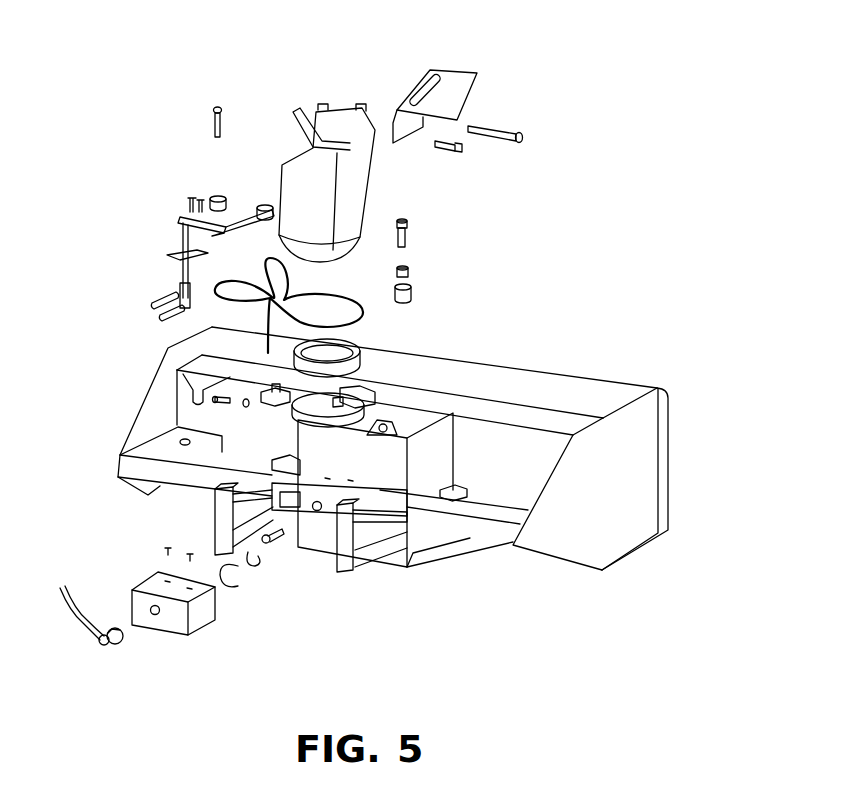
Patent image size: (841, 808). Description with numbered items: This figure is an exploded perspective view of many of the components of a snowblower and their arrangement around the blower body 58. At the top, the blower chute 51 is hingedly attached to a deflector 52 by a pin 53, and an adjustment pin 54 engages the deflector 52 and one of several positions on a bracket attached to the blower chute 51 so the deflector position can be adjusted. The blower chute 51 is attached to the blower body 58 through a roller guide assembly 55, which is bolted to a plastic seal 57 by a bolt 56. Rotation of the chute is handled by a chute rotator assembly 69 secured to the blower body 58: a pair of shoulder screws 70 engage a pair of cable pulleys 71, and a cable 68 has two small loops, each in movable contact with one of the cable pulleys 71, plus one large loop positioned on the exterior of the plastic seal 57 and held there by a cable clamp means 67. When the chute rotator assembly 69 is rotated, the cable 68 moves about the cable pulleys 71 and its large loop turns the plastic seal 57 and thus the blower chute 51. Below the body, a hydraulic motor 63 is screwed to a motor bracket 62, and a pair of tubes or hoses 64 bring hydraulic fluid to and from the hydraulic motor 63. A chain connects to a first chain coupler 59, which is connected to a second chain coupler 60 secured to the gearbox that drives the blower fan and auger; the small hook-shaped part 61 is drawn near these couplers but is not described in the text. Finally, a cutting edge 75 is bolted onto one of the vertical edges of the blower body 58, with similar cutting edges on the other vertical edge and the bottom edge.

The blower chute 51 is at (342, 108).
The deflector 52 is at (452, 72).
The pin 53 is at (495, 127).
The adjustment pin 54 is at (445, 150).
The roller guide assembly 55 is at (413, 296).
The bolt 56 is at (407, 237).
The plastic seal 57 is at (366, 394).
The blower body 58 is at (593, 378).
The first chain coupler 59 is at (256, 562).
The second chain coupler 60 is at (274, 540).
The hook 61 is at (228, 580).
The motor bracket 62 is at (155, 614).
The hydraulic motor 63 is at (102, 646).
The tubes or hoses 64 is at (64, 590).
The cable clamp means 67 is at (213, 402).
The cable 68 is at (330, 289).
The chute rotator assembly 69 is at (183, 222).
The shoulder screws 70 is at (213, 121).
The cable pulleys 71 is at (264, 205).
The cutting edge 75 is at (670, 497).